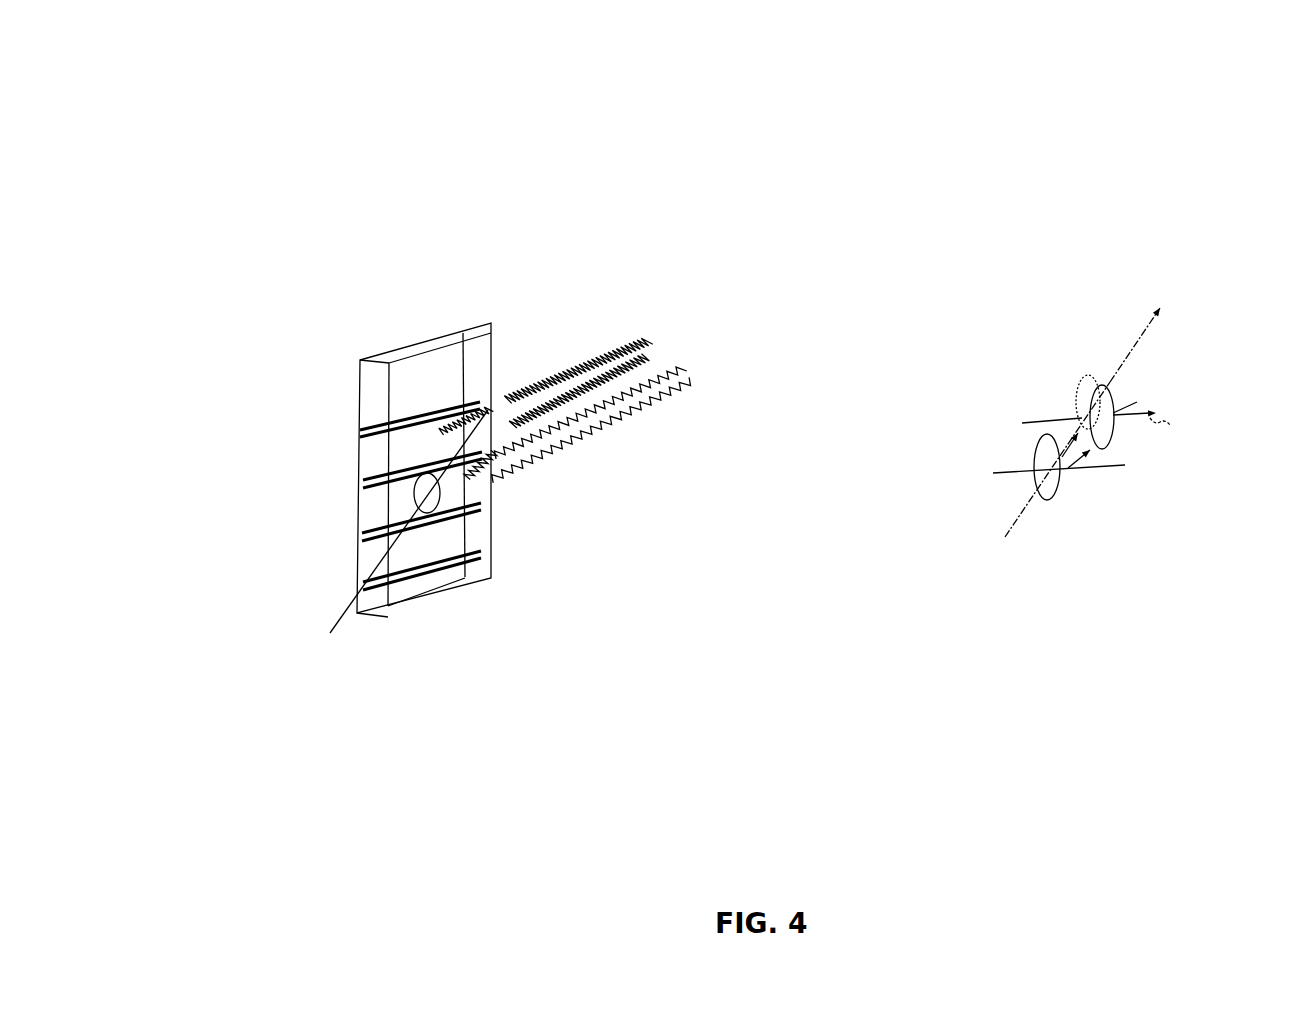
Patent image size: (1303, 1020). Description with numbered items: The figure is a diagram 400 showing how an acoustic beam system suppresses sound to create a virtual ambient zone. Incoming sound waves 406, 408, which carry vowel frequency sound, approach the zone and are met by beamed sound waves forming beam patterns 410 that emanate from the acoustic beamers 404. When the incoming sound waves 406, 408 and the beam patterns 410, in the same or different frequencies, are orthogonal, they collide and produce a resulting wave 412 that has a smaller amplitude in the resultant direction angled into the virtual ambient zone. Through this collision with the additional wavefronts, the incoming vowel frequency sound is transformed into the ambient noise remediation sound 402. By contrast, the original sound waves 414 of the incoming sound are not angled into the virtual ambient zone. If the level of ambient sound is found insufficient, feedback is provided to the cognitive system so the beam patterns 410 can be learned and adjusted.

The diagram 400 is at (188, 72).
The ambient noise remediation sound 402 is at (688, 367).
The acoustic beamers 404 is at (342, 432).
The incoming sound wave 406 is at (330, 633).
The incoming sound wave 408 is at (1013, 532).
The beam patterns 410 is at (1132, 461).
The resulting wave 412 is at (1142, 399).
The original sound waves 414 is at (1165, 305).